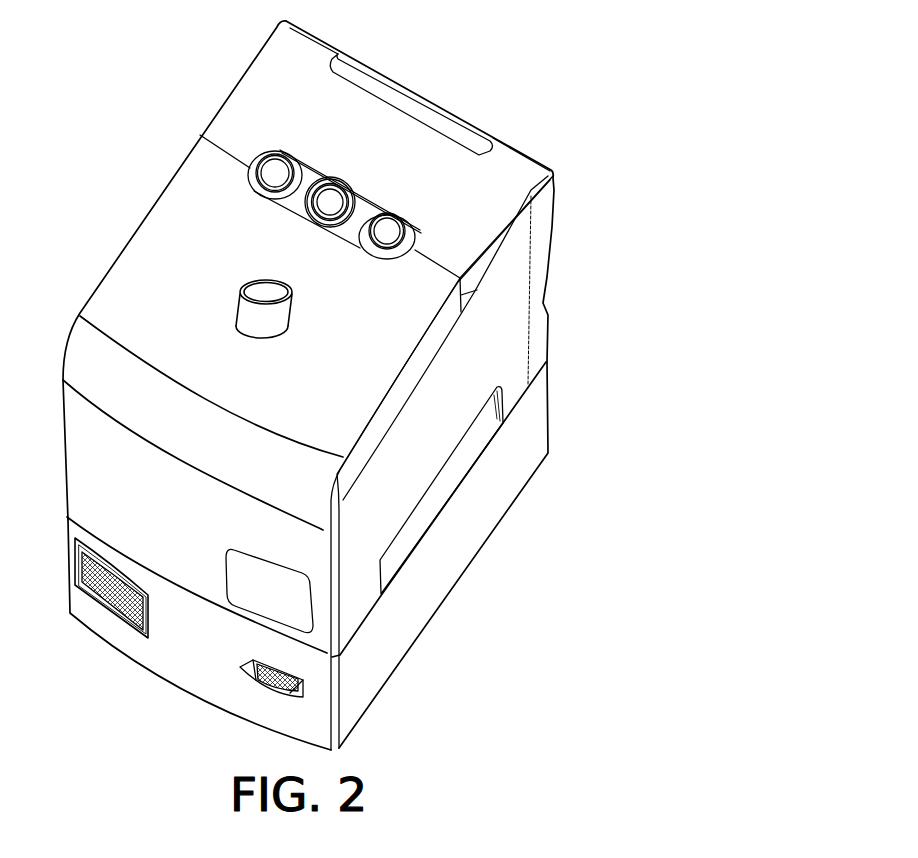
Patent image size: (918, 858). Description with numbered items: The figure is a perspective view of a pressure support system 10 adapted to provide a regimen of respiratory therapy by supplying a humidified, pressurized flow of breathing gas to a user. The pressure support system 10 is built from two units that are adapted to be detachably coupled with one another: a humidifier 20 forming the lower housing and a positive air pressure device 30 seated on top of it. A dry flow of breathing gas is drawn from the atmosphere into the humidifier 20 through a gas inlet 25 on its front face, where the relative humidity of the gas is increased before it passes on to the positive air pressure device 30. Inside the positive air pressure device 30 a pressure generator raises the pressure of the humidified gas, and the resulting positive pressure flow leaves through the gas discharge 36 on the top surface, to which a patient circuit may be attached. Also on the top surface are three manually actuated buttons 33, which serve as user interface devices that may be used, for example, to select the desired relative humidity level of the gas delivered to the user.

The pressure support system 10 is at (572, 73).
The humidifier 20 is at (402, 593).
The gas inlet 25 is at (100, 608).
The positive air pressure device 30 is at (176, 231).
The manually actuated buttons 33 is at (275, 168).
The gas discharge 36 is at (242, 300).